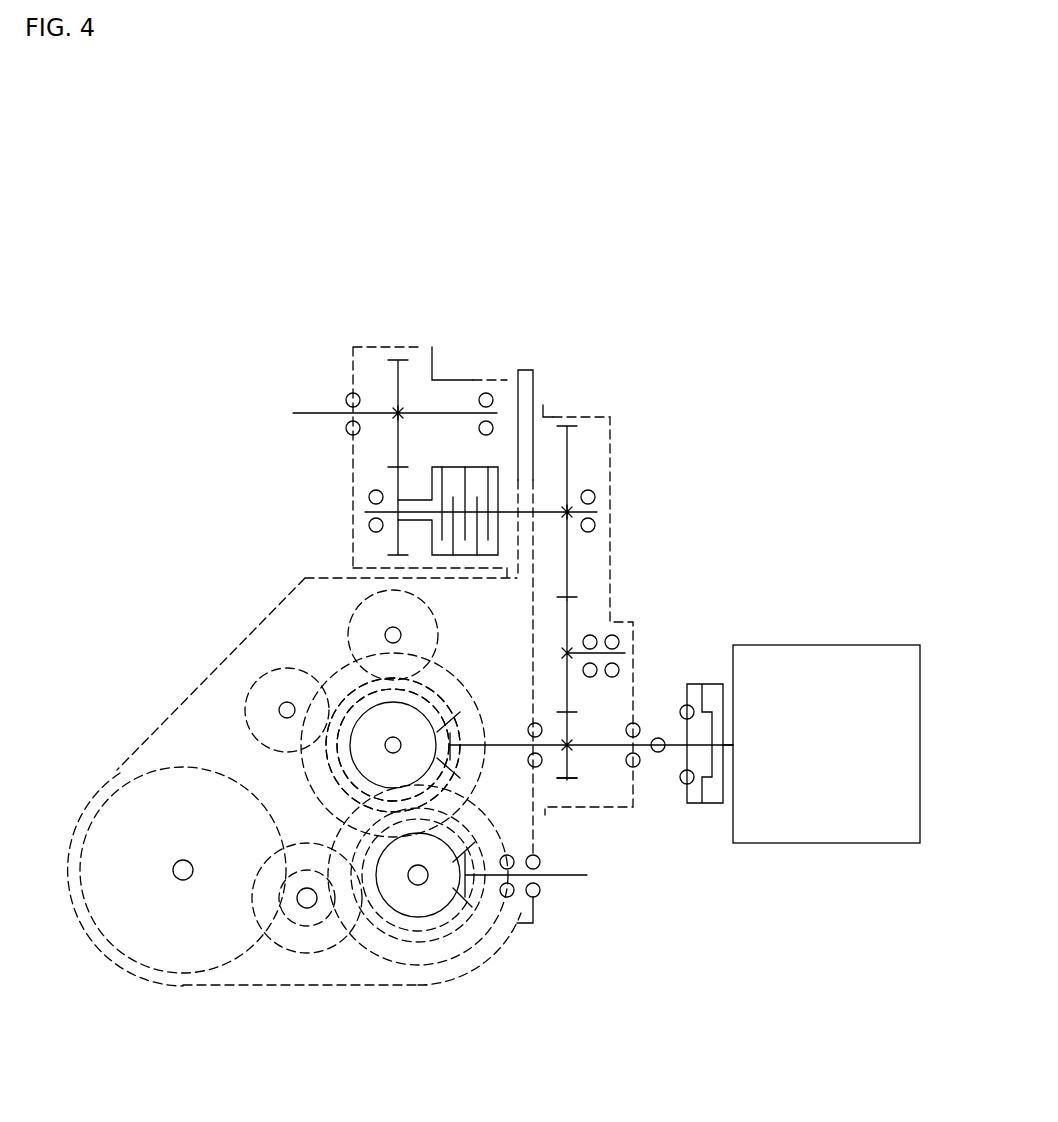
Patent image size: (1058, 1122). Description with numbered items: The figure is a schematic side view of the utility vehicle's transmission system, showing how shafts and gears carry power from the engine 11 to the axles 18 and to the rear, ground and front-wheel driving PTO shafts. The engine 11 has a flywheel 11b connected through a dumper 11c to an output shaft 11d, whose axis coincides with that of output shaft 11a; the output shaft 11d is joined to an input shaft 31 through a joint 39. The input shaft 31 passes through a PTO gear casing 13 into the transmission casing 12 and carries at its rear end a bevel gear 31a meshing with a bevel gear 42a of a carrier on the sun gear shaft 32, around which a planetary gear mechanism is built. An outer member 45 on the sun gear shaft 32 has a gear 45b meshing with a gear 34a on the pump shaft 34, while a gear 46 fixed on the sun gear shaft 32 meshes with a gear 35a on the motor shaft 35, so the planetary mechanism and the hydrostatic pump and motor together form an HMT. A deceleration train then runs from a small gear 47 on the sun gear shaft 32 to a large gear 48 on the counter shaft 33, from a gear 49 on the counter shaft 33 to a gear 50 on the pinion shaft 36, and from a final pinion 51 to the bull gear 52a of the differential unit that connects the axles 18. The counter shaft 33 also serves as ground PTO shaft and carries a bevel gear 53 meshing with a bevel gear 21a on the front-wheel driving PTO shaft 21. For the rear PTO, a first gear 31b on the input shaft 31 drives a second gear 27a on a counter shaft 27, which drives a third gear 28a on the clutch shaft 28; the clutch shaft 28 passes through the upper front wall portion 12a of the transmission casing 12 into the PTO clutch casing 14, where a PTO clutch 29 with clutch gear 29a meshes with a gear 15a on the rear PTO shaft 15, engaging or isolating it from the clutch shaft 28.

The engine 11 is at (847, 763).
The output shaft 11a is at (730, 737).
The flywheel 11b is at (702, 684).
The dumper 11c is at (687, 770).
The output shaft 11d is at (677, 740).
The transmission casing 12 is at (252, 633).
The upper front wall portion 12a is at (533, 376).
The PTO gear casing 13 is at (610, 500).
The PTO clutch casing 14 is at (457, 380).
The rear PTO shaft 15 is at (315, 415).
The gear 15a is at (398, 370).
The axles 18 is at (183, 880).
The front-wheel driving PTO shaft 21 is at (587, 875).
The bevel gear 21a is at (533, 923).
The counter shaft 27 is at (617, 653).
The second gear 27a is at (567, 607).
The clutch shaft 28 is at (367, 512).
The third gear 28a is at (567, 448).
The PTO clutch 29 is at (498, 467).
The clutch gear 29a is at (395, 475).
The input shaft 31 is at (592, 747).
The bevel gear 31a is at (460, 712).
The first gear 31b is at (567, 780).
The sun gear shaft 32 is at (386, 744).
The counter shaft 33 is at (420, 880).
The pump shaft 34 is at (386, 630).
The gear 34a is at (432, 618).
The motor shaft 35 is at (279, 705).
The gear 35a is at (243, 704).
The pinion shaft 36 is at (307, 908).
The joint 39 is at (658, 738).
The bevel gear 42a is at (343, 773).
The outer member 45 is at (480, 767).
The gear 45b is at (423, 687).
The gear 46 is at (393, 745).
The diametrically small gear 47 is at (368, 706).
The diametrically large gear 48 is at (473, 903).
The gear 49 is at (415, 930).
The gear 50 is at (273, 950).
The final pinion 51 is at (317, 923).
The bull gear 52a is at (132, 779).
The bevel gear 53 is at (460, 897).